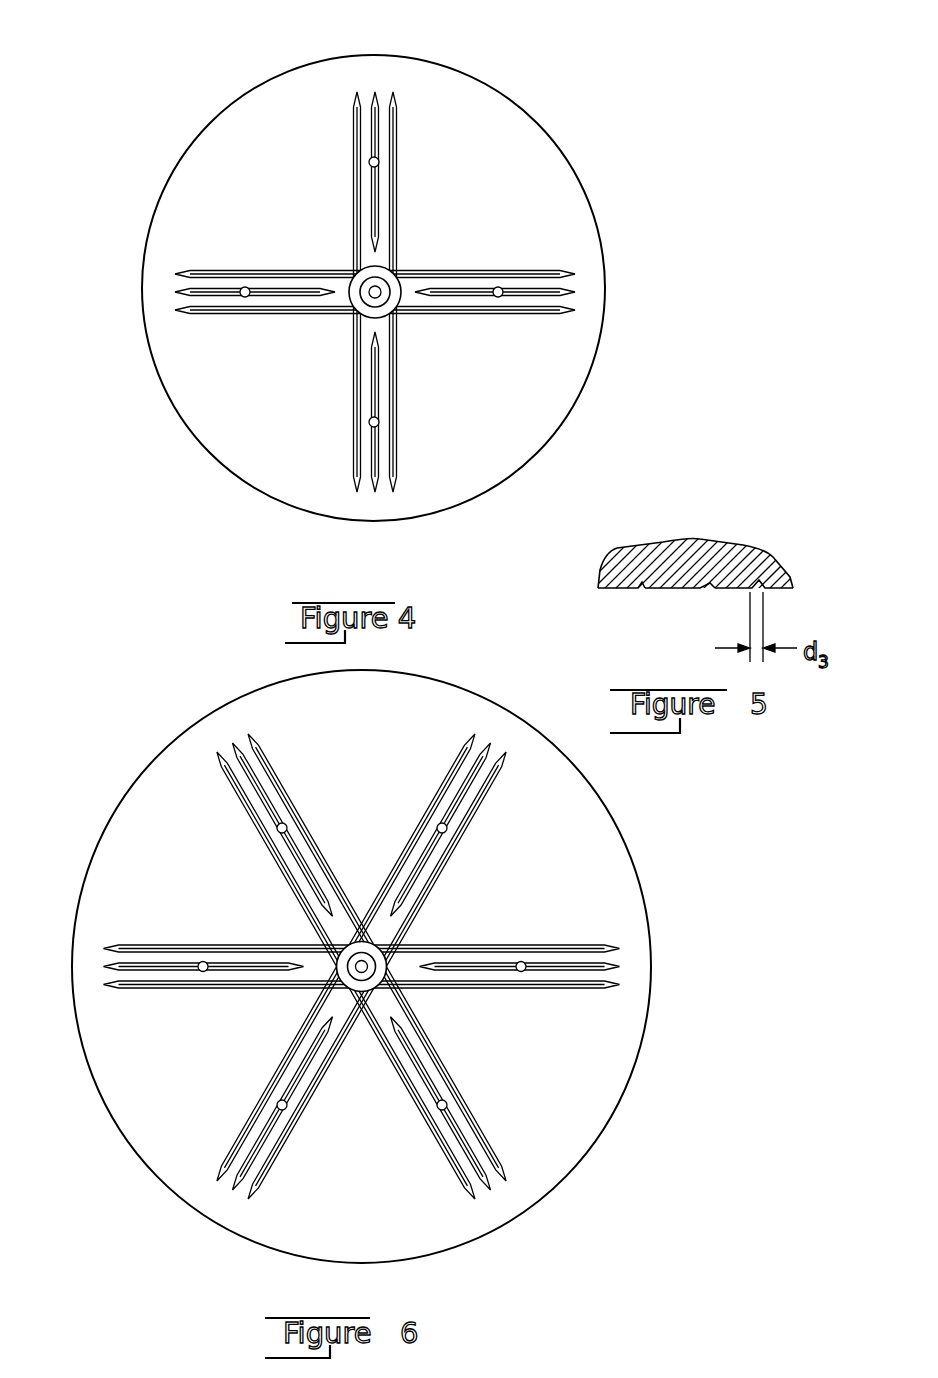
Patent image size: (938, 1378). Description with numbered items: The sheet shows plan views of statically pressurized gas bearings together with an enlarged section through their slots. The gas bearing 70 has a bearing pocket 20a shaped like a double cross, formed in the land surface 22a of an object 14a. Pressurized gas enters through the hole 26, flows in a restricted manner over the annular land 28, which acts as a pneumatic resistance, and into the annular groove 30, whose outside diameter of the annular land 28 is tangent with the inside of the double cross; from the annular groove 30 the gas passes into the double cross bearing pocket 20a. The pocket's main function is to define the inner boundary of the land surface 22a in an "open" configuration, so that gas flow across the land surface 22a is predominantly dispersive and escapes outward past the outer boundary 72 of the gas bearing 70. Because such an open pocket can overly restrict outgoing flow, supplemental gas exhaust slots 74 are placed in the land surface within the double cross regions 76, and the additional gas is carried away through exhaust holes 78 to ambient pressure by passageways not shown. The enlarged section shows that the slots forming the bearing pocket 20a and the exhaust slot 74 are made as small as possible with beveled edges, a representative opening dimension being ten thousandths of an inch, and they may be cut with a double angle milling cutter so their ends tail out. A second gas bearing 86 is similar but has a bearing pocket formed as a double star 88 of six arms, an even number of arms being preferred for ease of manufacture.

In FIG. 4, the gas bearing 70 is at (410, 288).
In FIG. 4, the object 14a is at (405, 288).
In FIG. 5, the object 14a is at (699, 561).
In FIG. 4, the outer boundary 72 is at (405, 288).
In FIG. 4, the land surface 22a is at (570, 386).
In FIG. 4, the double cross bearing pocket 20a is at (398, 136).
In FIG. 5, the double cross bearing pocket 20a is at (640, 589).
In FIG. 4, the gas exhaust slot 74 is at (378, 90).
In FIG. 5, the gas exhaust slot 74 is at (700, 589).
In FIG. 6, the gas exhaust slot 74 is at (488, 745).
In FIG. 4, the double cross region 76 is at (378, 291).
In FIG. 4, the exhaust hole 78 is at (368, 163).
In FIG. 6, the exhaust hole 78 is at (203, 961).
In FIG. 4, the hole 26 is at (388, 285).
In FIG. 6, the hole 26 is at (345, 985).
In FIG. 4, the annular land 28 is at (368, 270).
In FIG. 6, the annular land 28 is at (381, 985).
In FIG. 4, the annular groove 30 is at (363, 306).
In FIG. 6, the annular groove 30 is at (344, 952).
In FIG. 6, the gas bearing 86 is at (627, 825).
In FIG. 6, the double star 88 is at (256, 734).